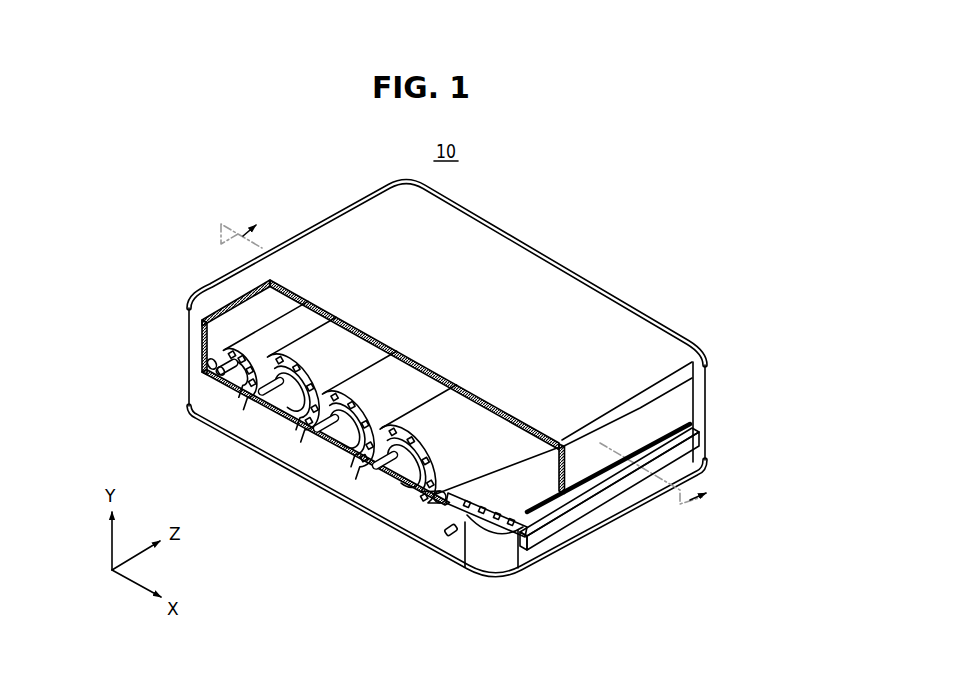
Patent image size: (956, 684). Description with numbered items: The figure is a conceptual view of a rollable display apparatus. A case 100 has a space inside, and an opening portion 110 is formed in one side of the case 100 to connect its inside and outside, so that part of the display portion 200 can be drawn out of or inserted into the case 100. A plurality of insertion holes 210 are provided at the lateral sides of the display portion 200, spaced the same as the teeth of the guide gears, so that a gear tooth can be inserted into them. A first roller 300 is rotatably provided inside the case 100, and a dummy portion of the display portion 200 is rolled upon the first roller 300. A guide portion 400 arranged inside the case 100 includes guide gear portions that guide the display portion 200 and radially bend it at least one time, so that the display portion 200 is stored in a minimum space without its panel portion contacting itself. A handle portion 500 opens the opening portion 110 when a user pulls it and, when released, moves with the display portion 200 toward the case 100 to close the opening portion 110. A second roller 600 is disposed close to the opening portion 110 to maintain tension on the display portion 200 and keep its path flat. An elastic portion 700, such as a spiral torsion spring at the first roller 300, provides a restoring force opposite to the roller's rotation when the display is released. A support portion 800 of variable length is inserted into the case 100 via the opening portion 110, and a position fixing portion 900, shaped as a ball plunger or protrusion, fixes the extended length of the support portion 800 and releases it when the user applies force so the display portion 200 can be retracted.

The case 100 is at (520, 258).
The opening portion 110 is at (635, 455).
The display portion 200 is at (359, 376).
The insertion holes 210 is at (303, 443).
The first roller 300 is at (211, 360).
The guide portion 400 is at (264, 415).
The handle portion 500 is at (616, 481).
The second roller 600 is at (439, 503).
The elastic portion 700 is at (221, 383).
The support portion 800 is at (504, 531).
The position fixing portion 900 is at (451, 542).